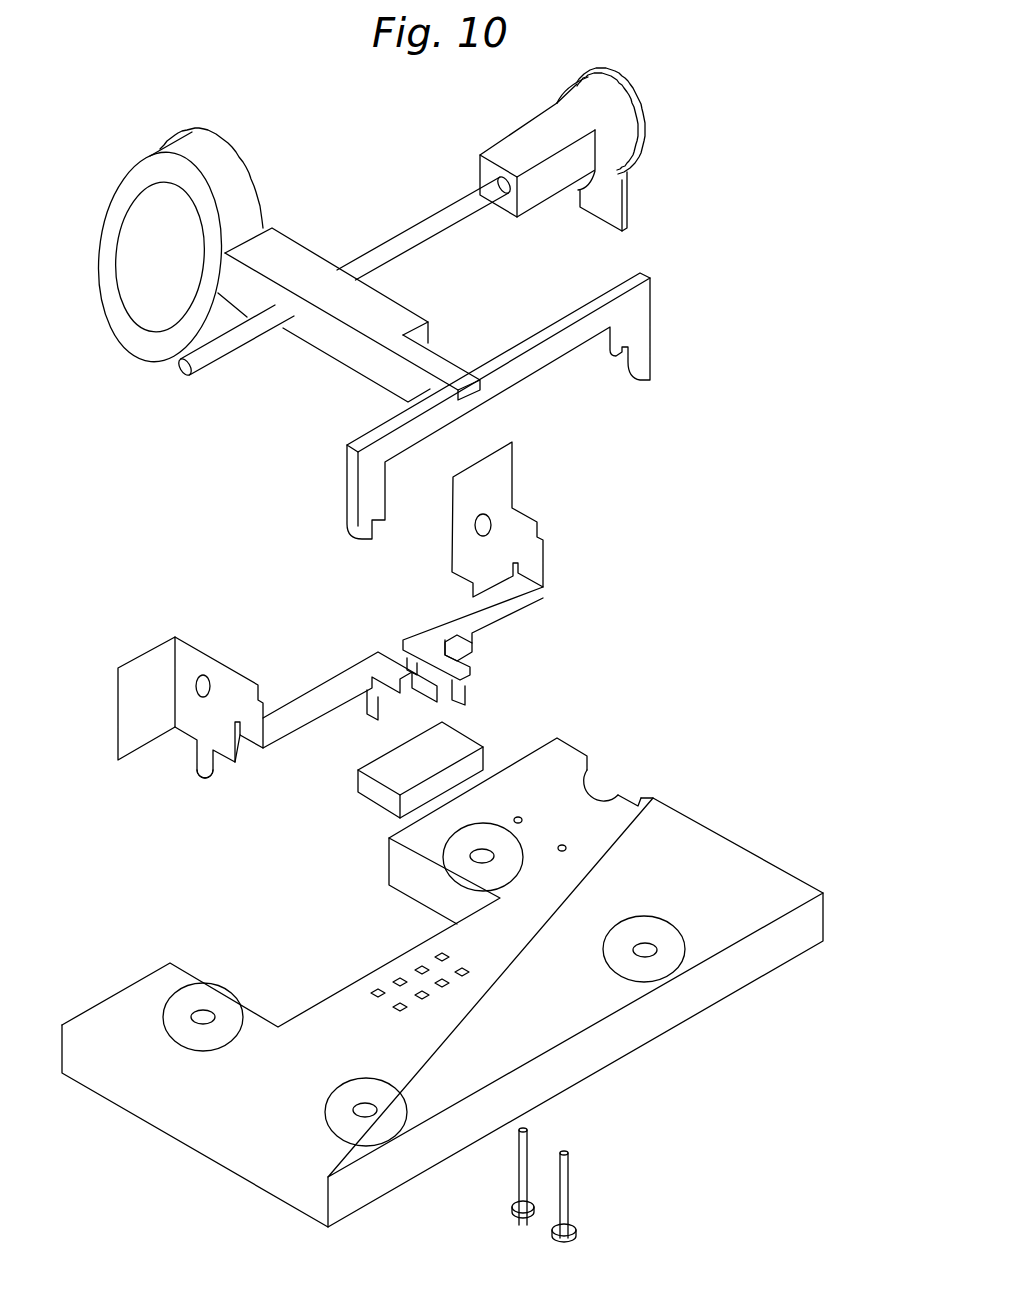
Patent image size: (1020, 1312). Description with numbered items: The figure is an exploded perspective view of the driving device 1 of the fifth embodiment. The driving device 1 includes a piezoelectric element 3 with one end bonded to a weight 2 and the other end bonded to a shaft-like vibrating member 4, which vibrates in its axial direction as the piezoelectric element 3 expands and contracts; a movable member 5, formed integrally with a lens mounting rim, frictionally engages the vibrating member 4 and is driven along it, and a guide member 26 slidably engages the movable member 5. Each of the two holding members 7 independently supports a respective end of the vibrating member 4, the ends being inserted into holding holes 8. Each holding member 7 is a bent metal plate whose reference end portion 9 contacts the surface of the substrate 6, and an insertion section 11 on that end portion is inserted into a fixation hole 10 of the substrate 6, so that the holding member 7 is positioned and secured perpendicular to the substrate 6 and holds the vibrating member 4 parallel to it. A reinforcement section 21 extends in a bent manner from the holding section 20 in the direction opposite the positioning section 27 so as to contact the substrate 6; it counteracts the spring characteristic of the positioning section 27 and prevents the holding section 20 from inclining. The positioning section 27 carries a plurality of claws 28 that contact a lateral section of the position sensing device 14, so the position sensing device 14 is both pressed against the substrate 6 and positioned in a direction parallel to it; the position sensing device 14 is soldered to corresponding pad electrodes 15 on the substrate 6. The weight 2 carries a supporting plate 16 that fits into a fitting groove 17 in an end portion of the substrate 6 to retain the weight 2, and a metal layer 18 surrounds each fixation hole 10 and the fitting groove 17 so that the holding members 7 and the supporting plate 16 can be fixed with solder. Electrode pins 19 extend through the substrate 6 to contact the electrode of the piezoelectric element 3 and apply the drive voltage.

The driving device 1 is at (340, 150).
The weight 2 is at (616, 135).
The piezoelectric element 3 is at (517, 147).
The vibrating member 4 is at (423, 215).
The movable member 5 is at (309, 268).
The substrate 6 is at (705, 848).
The holding member 7 is at (119, 655).
The holding hole 8 is at (206, 676).
The reference end portion 9 is at (224, 762).
The fixation hole 10 is at (482, 855).
The insertion section 11 is at (199, 775).
The position sensing device 14 is at (378, 793).
The pad electrode 15 is at (421, 965).
The supporting plate 16 is at (628, 212).
The fitting groove 17 is at (640, 797).
The metal layer 18 is at (605, 785).
The electrode pin 19 is at (517, 1188).
The holding section 20 is at (198, 723).
The reinforcement section 21 is at (142, 700).
The guide member 26 is at (530, 370).
The positioning section 27 is at (322, 696).
The claw 28 is at (450, 645).